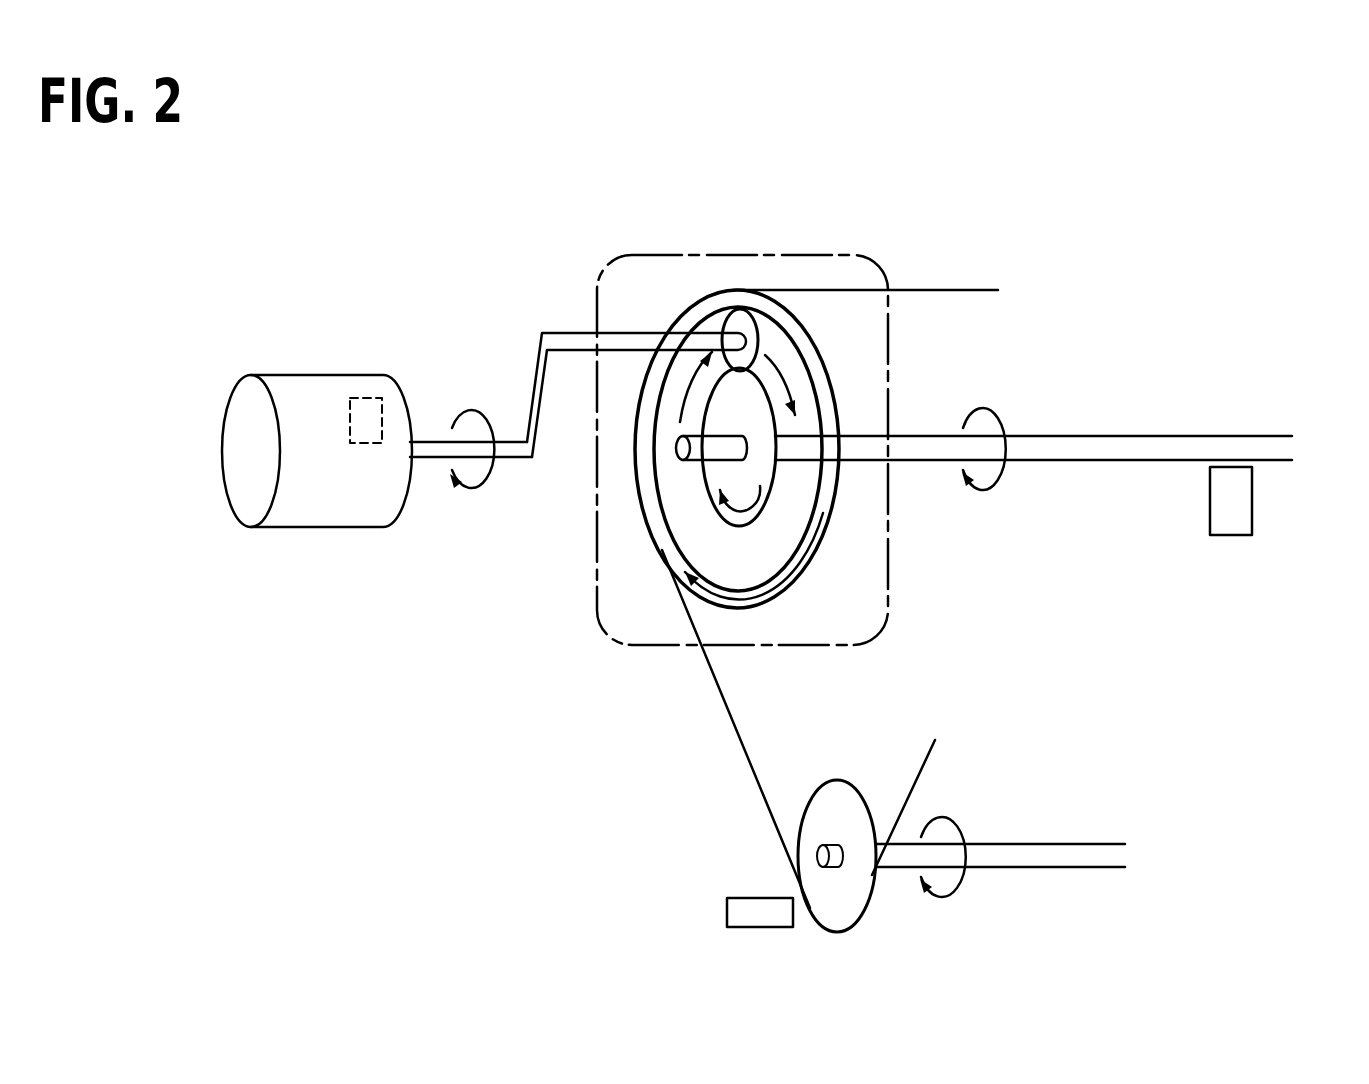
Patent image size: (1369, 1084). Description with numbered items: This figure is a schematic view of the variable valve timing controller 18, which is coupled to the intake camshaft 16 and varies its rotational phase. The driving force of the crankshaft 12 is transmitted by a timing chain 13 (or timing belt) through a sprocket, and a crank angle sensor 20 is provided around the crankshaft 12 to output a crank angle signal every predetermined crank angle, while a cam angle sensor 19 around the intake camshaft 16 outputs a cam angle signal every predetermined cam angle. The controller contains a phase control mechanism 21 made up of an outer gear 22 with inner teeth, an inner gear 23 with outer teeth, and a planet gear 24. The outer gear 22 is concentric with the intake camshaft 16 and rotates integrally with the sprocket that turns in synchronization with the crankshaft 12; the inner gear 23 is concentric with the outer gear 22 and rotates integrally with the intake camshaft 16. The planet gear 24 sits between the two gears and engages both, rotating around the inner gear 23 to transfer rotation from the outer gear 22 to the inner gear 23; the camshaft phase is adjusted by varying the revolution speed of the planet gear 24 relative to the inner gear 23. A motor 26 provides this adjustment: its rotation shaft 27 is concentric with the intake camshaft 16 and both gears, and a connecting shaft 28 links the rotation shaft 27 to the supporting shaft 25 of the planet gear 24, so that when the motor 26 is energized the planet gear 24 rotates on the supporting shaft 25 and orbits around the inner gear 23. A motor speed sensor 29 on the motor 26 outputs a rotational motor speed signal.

The crankshaft 12 is at (1003, 844).
The timing chain 13 is at (737, 742).
The intake camshaft 16 is at (1040, 436).
The variable valve timing controller 18 is at (538, 293).
The cam angle sensor 19 is at (1252, 497).
The crank angle sensor 20 is at (747, 898).
The phase control mechanism 21 is at (735, 255).
The outer gear 22 is at (806, 392).
The inner gear 23 is at (778, 477).
The planet gear 24 is at (757, 333).
The supporting shaft 25 is at (630, 333).
The motor 26 is at (321, 375).
The rotation shaft 27 is at (430, 442).
The connecting shaft 28 is at (525, 378).
The motor speed sensor 29 is at (366, 398).